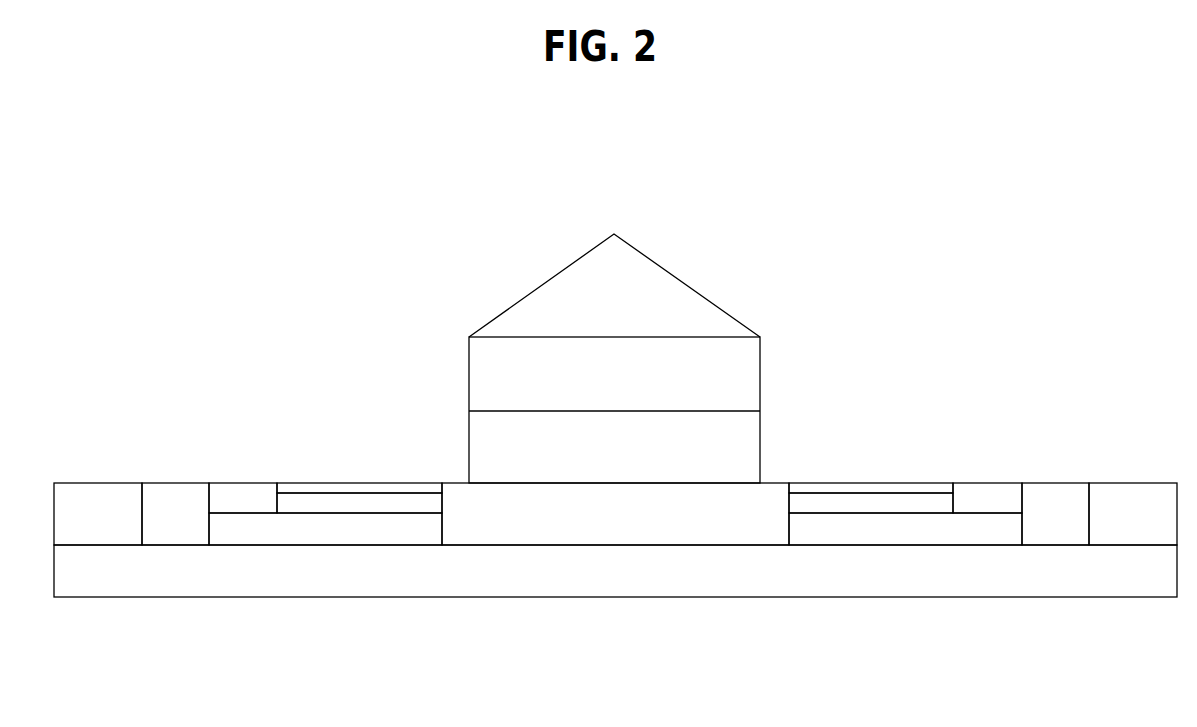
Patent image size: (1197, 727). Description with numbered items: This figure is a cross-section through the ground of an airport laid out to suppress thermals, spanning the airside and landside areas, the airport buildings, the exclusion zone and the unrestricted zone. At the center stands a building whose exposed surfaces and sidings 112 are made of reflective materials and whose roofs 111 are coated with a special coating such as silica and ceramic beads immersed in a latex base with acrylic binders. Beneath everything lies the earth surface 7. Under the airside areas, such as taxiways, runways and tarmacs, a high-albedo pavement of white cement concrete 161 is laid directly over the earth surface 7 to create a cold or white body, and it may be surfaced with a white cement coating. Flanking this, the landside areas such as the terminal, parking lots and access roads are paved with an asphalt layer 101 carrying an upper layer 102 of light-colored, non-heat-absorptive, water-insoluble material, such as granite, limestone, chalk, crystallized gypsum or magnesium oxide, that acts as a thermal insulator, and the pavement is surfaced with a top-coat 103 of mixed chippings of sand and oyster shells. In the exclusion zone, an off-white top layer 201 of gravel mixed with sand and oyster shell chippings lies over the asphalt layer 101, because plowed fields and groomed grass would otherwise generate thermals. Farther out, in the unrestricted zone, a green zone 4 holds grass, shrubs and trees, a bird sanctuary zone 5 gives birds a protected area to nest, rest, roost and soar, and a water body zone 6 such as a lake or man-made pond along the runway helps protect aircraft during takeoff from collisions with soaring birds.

The green zone 4 is at (83, 493).
The bird sanctuary zone 5 is at (1157, 498).
The water body zone 6 is at (150, 493).
The earth surface 7 is at (345, 577).
The asphalt layer 101 is at (953, 533).
The upper layer 102 is at (383, 500).
The top-coat 103 is at (354, 483).
The roofs 111 is at (547, 306).
The exposed surfaces and sidings 112 is at (469, 378).
The white cement concrete 161 is at (643, 514).
The top layer 201 is at (229, 483).